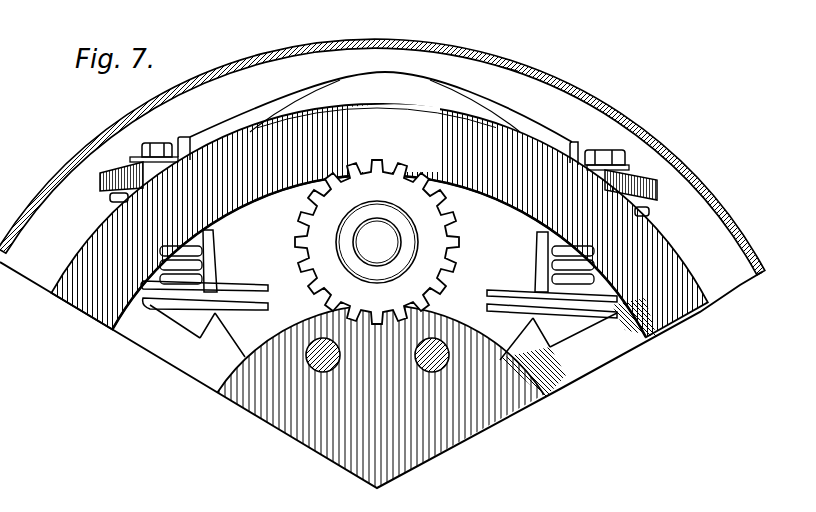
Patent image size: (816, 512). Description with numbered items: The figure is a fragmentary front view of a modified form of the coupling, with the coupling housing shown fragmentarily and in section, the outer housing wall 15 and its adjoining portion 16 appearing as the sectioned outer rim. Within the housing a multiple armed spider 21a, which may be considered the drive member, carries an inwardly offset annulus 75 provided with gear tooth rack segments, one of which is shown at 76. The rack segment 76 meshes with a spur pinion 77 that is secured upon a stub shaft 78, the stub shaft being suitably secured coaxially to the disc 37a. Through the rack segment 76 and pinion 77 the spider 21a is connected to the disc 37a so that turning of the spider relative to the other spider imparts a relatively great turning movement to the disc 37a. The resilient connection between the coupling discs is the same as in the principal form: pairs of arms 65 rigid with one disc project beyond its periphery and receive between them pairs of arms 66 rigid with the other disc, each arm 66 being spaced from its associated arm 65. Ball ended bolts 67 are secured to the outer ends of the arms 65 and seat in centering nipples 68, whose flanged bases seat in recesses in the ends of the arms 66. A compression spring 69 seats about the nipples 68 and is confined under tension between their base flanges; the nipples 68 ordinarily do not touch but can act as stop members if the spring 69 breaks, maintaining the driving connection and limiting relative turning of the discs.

The outer rim 15 is at (683, 145).
The drum wall 16 is at (508, 67).
The multiple armed spider 21a is at (278, 410).
The disc 37a is at (337, 80).
The arms 65 is at (240, 121).
The arms 66 is at (130, 171).
The ball ended bolts 67 is at (150, 142).
The centering nipples 68 is at (200, 281).
The compression spring 69 is at (110, 198).
The inwardly offset annulus 75 is at (542, 163).
The gear tooth rack segment 76 is at (394, 157).
The spur pinion 77 is at (432, 259).
The stub shaft 78 is at (360, 239).